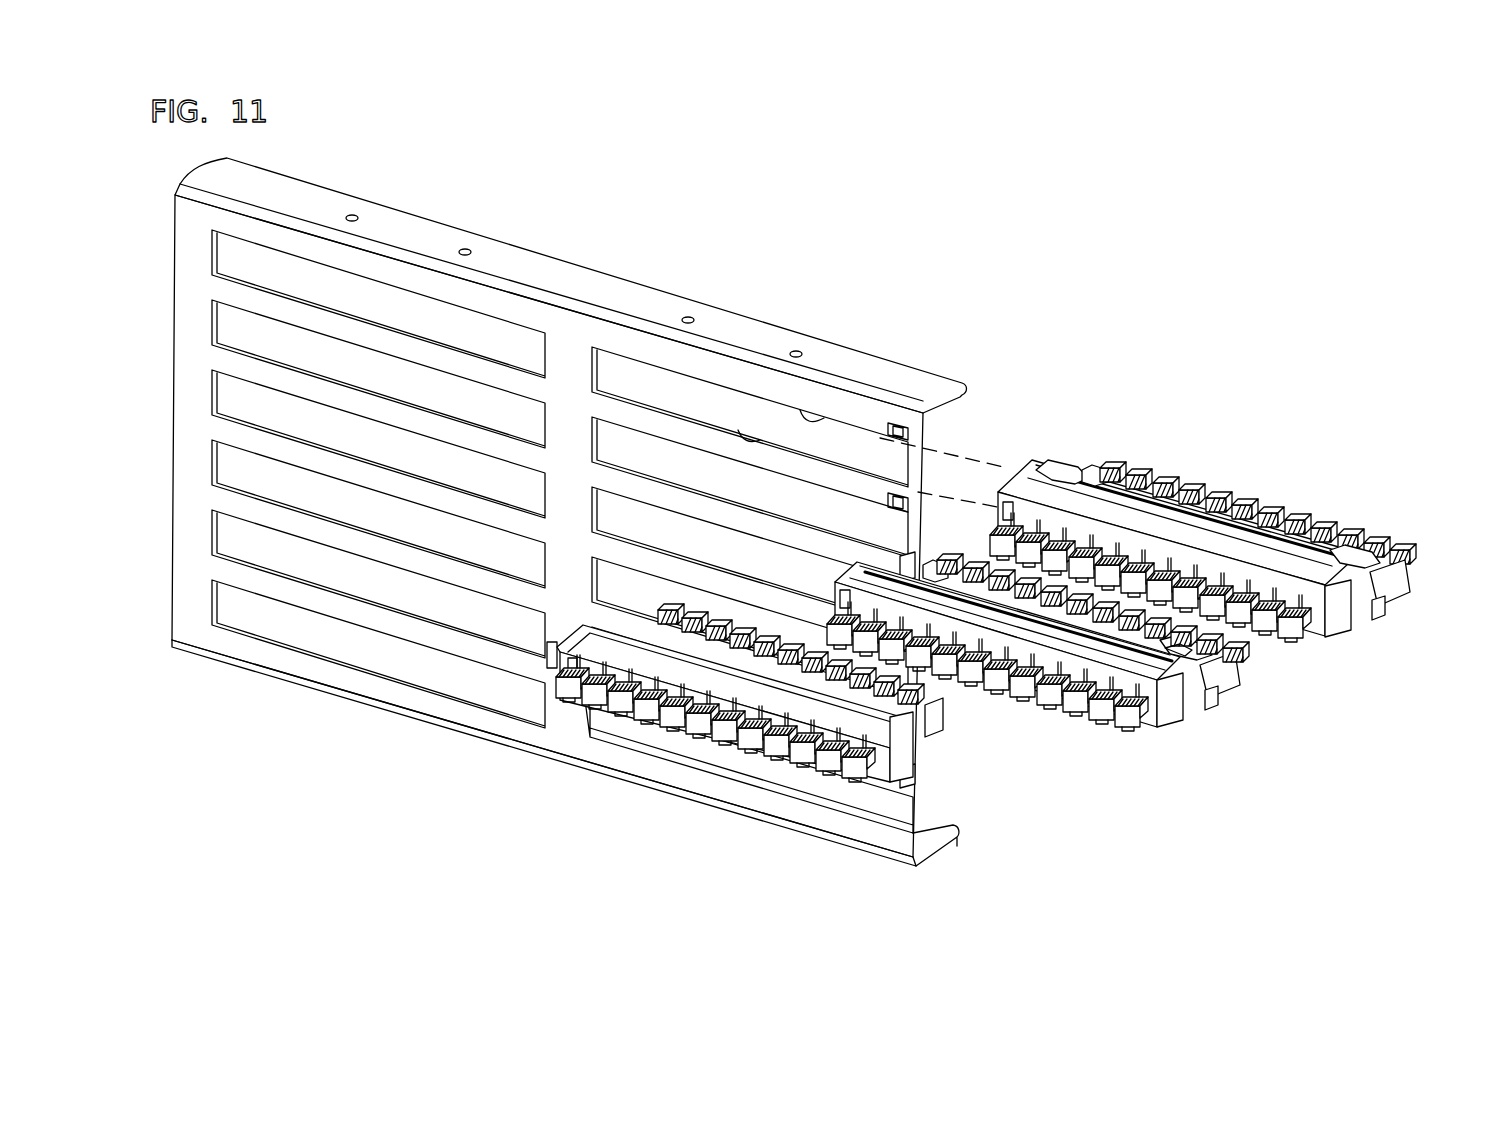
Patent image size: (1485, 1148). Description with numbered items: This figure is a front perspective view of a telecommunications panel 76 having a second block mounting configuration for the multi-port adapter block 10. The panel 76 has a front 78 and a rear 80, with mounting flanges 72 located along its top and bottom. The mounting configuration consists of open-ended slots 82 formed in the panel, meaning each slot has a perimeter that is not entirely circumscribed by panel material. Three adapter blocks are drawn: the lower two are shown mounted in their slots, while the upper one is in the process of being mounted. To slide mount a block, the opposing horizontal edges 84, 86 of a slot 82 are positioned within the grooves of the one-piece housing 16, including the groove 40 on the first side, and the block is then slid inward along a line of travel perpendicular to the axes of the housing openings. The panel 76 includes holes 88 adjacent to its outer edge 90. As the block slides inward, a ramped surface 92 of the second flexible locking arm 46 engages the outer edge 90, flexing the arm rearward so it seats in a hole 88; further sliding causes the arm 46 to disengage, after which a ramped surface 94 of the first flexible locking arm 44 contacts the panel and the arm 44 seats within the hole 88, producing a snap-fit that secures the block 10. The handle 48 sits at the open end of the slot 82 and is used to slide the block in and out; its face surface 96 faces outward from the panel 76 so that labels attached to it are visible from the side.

The multi-port adapter block 10 is at (1212, 468).
The one-piece housing 16 is at (1258, 530).
The groove 40 is at (1130, 500).
The first flexible locking arm 44 is at (1362, 558).
The second flexible locking arm 46 is at (1100, 470).
The handle 48 is at (1377, 612).
The mounting flanges 72 is at (581, 281).
The telecommunications panel 76 is at (527, 183).
The front 78 is at (313, 735).
The rear 80 is at (876, 320).
The open-ended slots 82 is at (680, 380).
The horizontal edge 84 is at (818, 417).
The horizontal edge 86 is at (745, 438).
The holes 88 is at (923, 502).
The outer edge 90 is at (902, 497).
The ramped surface 92 is at (1063, 470).
The ramped surface 94 is at (1177, 652).
The face surface 96 is at (1388, 596).